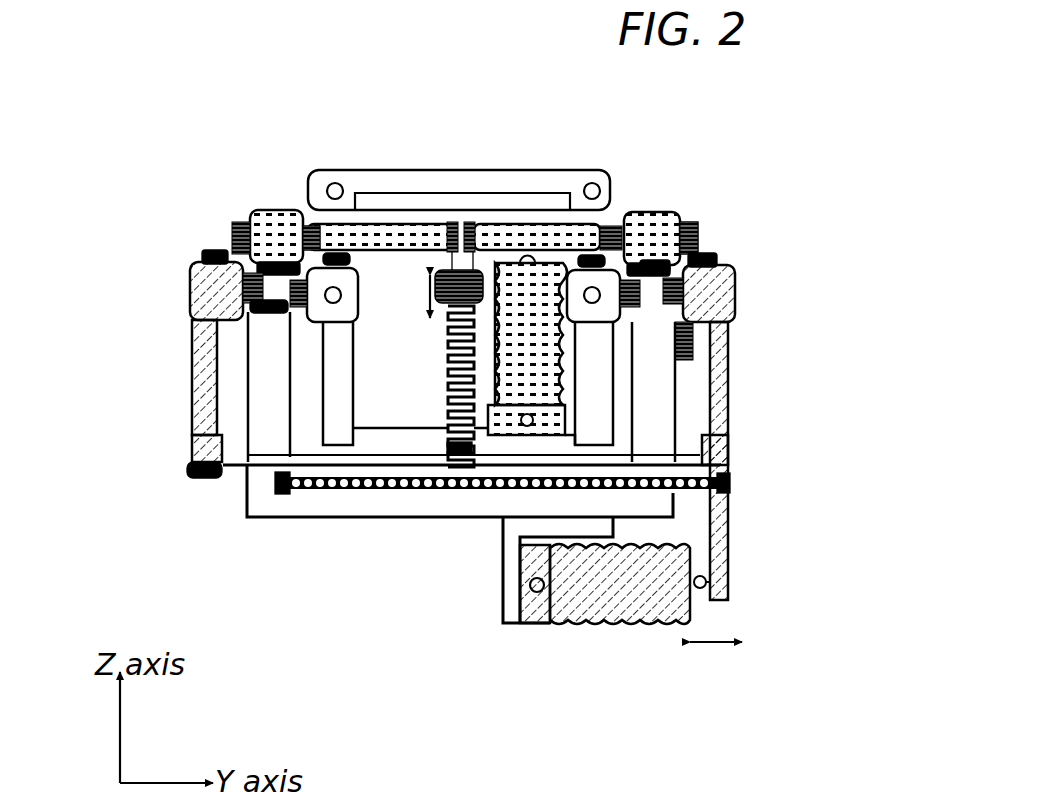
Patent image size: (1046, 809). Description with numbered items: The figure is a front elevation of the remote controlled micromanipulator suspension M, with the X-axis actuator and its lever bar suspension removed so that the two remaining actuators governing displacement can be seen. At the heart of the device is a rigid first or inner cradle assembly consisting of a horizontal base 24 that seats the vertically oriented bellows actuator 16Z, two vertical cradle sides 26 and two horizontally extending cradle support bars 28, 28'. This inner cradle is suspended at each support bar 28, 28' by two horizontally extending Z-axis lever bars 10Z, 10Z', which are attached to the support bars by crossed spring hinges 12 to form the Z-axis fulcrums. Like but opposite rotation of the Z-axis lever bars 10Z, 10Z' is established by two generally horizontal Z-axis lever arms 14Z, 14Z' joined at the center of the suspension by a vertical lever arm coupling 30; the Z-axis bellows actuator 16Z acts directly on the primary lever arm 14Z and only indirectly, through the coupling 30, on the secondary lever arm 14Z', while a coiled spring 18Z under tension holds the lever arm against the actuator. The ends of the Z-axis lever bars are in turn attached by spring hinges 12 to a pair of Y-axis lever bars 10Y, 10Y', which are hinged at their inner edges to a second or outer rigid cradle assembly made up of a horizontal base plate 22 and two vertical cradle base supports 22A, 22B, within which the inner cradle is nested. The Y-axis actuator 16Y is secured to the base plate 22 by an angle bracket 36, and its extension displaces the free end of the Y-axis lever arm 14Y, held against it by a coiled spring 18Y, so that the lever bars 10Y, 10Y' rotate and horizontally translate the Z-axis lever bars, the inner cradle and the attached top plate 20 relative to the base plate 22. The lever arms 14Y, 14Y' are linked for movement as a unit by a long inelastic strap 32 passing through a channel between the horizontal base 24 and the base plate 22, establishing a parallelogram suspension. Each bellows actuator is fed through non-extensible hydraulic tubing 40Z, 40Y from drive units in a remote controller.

The micromanipulator suspension M is at (273, 68).
The Z-axis lever bar 10Z is at (235, 205).
The Z-axis lever bar 10Z' is at (684, 203).
The Y-axis lever bar 10Y is at (750, 306).
The Y-axis lever bar 10Y' is at (174, 267).
The spring hinge 12 is at (320, 220).
The Z-axis lever arm 14Z is at (380, 176).
The Z-axis lever arm 14Z' is at (545, 175).
The Y-axis lever arm 14Y is at (770, 461).
The Y-axis lever arm 14Y' is at (145, 391).
The Z-axis bellows actuator 16Z is at (540, 313).
The Y-axis actuator 16Y is at (622, 595).
The coiled spring 18Z is at (425, 490).
The coiled spring 18Y is at (383, 490).
The top plate 20 is at (353, 186).
The base plate 22 is at (308, 508).
The cradle base support 22A is at (273, 408).
The cradle base support 22B is at (658, 388).
The horizontal base 24 is at (352, 490).
The cradle side 26 is at (343, 400).
The cradle support bar 28 is at (353, 312).
The cradle support bar 28' is at (703, 268).
The lever arm coupling 30 is at (458, 220).
The inelastic strap 32 is at (235, 470).
The angle bracket 36 is at (508, 597).
The hydraulic tubing 40Z is at (527, 420).
The hydraulic tubing 40Y is at (537, 592).